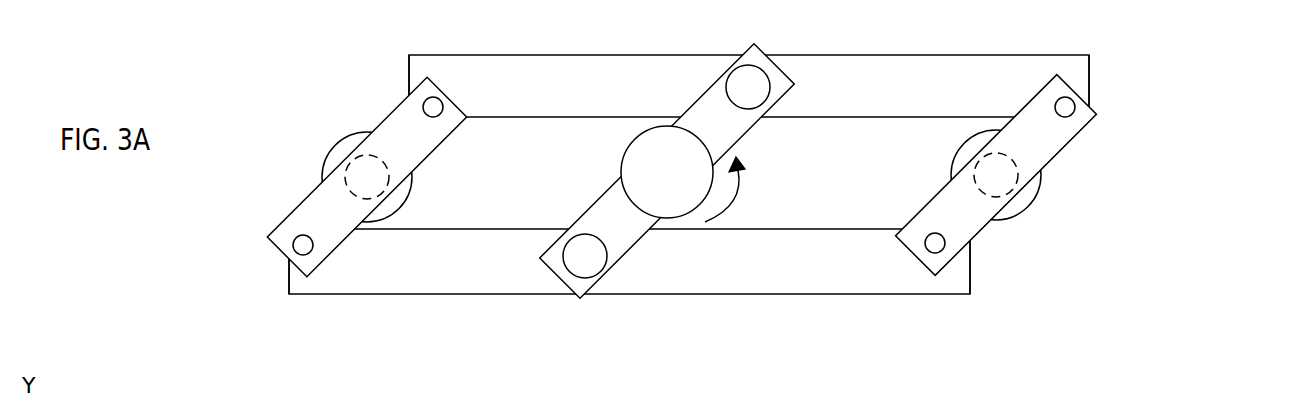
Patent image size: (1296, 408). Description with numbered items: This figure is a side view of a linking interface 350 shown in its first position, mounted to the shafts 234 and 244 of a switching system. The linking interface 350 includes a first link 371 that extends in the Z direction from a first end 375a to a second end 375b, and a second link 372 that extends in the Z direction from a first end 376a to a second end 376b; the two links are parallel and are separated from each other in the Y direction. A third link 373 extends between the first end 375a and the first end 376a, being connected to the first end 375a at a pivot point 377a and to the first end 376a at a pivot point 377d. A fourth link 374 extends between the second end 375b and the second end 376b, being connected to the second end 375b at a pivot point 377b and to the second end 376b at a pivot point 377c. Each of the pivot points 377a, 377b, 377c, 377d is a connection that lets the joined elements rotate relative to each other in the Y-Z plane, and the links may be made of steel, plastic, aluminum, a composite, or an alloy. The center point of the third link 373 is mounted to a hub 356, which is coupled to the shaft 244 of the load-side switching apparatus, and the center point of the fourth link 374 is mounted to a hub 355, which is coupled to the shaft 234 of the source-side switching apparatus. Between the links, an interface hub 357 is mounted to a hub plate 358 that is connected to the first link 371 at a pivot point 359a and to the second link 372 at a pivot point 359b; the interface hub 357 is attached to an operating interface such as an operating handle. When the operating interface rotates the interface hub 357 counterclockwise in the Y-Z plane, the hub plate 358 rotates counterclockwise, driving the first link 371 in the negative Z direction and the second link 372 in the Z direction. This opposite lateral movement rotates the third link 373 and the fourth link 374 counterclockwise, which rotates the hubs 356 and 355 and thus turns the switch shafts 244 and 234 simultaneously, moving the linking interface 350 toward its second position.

The linking interface 350 is at (1283, 36).
The first link 371 is at (920, 70).
The second link 372 is at (783, 267).
The third link 373 is at (310, 208).
The fourth link 374 is at (1050, 137).
The hub plate 358 is at (613, 202).
The interface hub 357 is at (652, 163).
The hub 356 is at (343, 133).
The hub 355 is at (1007, 221).
The shaft 244 is at (377, 177).
The shaft 234 is at (1012, 180).
The pivot point 377a is at (433, 107).
The pivot point 377b is at (1068, 107).
The pivot point 377c is at (937, 243).
The pivot point 377d is at (303, 245).
The pivot point 359a is at (752, 86).
The pivot point 359b is at (586, 257).
The first end 375a is at (409, 72).
The second end 375b is at (1090, 76).
The first end 376a is at (290, 276).
The second end 376b is at (972, 281).